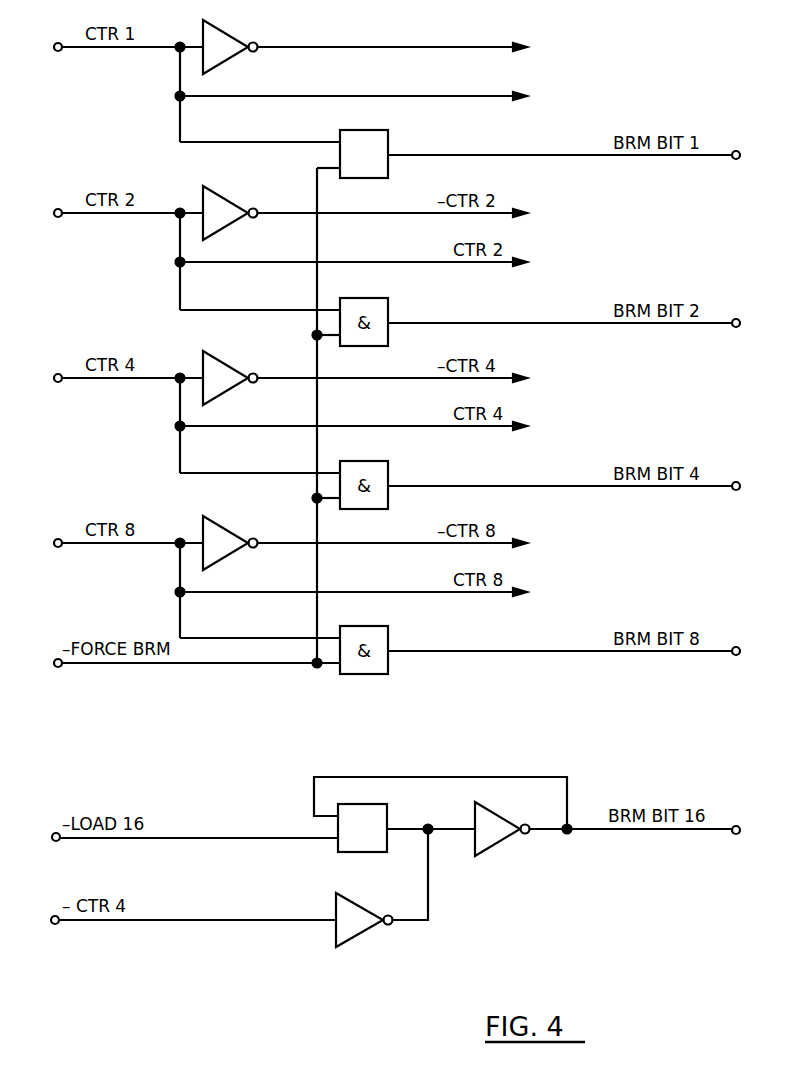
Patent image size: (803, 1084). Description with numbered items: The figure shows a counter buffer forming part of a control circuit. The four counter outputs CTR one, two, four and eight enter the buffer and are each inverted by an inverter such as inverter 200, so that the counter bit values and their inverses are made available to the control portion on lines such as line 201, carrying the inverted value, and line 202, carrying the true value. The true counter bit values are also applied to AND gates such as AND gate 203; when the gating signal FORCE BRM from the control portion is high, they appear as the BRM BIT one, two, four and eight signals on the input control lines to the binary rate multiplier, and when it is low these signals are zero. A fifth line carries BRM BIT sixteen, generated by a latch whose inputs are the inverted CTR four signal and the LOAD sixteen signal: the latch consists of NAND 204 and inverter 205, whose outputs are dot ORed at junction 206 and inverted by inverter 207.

The inverter 200 is at (228, 32).
The line 201 is at (371, 47).
The line 202 is at (375, 95).
The AND gate 203 is at (389, 139).
The NAND 204 is at (401, 799).
The inverter 205 is at (359, 905).
The junction 206 is at (428, 826).
The inverter 207 is at (530, 793).